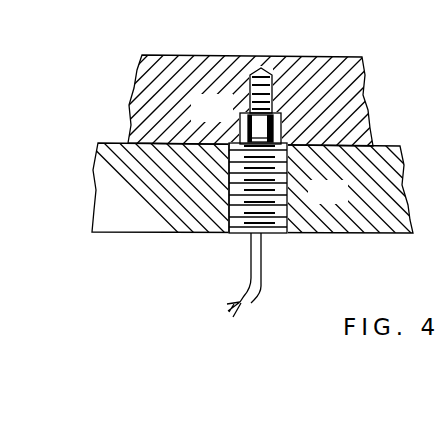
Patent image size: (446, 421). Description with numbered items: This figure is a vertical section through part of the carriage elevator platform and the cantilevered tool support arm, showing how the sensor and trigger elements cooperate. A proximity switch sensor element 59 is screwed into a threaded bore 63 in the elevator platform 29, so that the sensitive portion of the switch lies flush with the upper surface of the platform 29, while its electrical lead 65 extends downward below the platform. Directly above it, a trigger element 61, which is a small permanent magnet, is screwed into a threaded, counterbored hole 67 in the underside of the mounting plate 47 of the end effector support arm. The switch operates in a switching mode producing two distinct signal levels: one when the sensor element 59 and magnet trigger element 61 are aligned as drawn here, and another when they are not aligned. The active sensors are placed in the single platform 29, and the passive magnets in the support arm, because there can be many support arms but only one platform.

The elevator platform 29 is at (381, 234).
The mounting plate 47 is at (356, 60).
The proximity switch sensor element 59 is at (282, 184).
The trigger element 61 is at (238, 123).
The threaded bore 63 is at (227, 218).
The electrical lead 65 is at (262, 289).
The threaded counterbored hole 67 is at (273, 78).